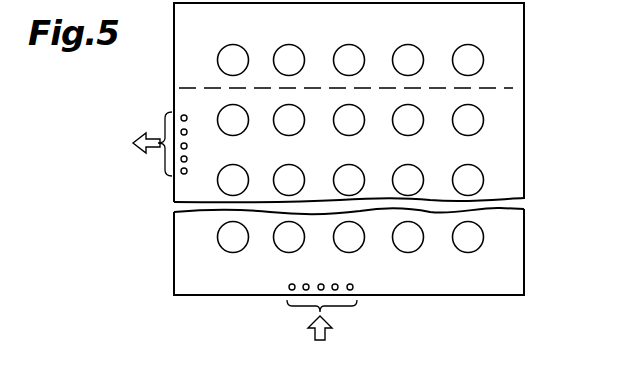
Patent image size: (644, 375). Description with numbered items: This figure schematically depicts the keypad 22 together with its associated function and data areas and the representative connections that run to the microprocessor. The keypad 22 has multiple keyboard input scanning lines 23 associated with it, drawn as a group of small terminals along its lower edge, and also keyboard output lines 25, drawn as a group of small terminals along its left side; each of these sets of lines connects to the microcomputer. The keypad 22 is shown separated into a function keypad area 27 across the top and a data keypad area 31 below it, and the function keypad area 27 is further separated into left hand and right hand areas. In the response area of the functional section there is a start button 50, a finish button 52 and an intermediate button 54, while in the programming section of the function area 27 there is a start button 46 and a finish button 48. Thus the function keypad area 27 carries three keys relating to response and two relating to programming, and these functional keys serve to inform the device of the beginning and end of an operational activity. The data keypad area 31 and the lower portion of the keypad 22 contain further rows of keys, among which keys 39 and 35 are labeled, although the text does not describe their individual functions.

The keypad 22 is at (164, 240).
The keyboard input scanning lines 23 is at (338, 322).
The keyboard output lines 25 is at (143, 161).
The function keypad area 27 is at (503, 56).
The data keypad area 31 is at (513, 153).
The key 35 is at (438, 275).
The key 39 is at (268, 275).
The start button 46 is at (398, 73).
The finish button 48 is at (460, 73).
The start button 50 is at (222, 68).
The finish button 52 is at (281, 73).
The intermediate button 54 is at (340, 73).